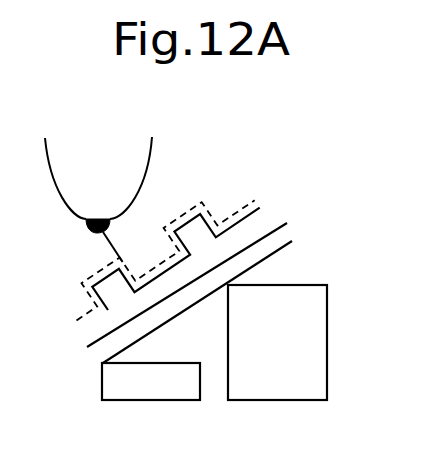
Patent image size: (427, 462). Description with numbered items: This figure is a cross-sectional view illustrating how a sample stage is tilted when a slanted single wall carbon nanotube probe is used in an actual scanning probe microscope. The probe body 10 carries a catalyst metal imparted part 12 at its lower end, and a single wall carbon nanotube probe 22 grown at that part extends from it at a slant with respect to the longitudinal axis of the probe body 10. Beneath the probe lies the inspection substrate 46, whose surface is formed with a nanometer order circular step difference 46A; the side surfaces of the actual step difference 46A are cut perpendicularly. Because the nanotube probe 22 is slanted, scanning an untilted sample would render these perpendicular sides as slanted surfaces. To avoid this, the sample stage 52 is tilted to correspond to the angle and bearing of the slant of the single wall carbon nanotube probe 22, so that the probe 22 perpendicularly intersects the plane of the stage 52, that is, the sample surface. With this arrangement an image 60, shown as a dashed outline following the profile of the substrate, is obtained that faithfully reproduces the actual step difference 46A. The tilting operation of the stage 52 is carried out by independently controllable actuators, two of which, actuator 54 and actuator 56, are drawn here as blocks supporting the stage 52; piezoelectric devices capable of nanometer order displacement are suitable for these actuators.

The probe body 10 is at (117, 162).
The catalyst metal imparted part 12 is at (91, 219).
The single wall carbon nanotube probe 22 is at (108, 237).
The inspection substrate 46 is at (257, 228).
The step difference 46A is at (127, 280).
The sample stage 52 is at (272, 247).
The actuator 54 is at (104, 383).
The actuator 56 is at (327, 371).
The image 60 is at (210, 212).